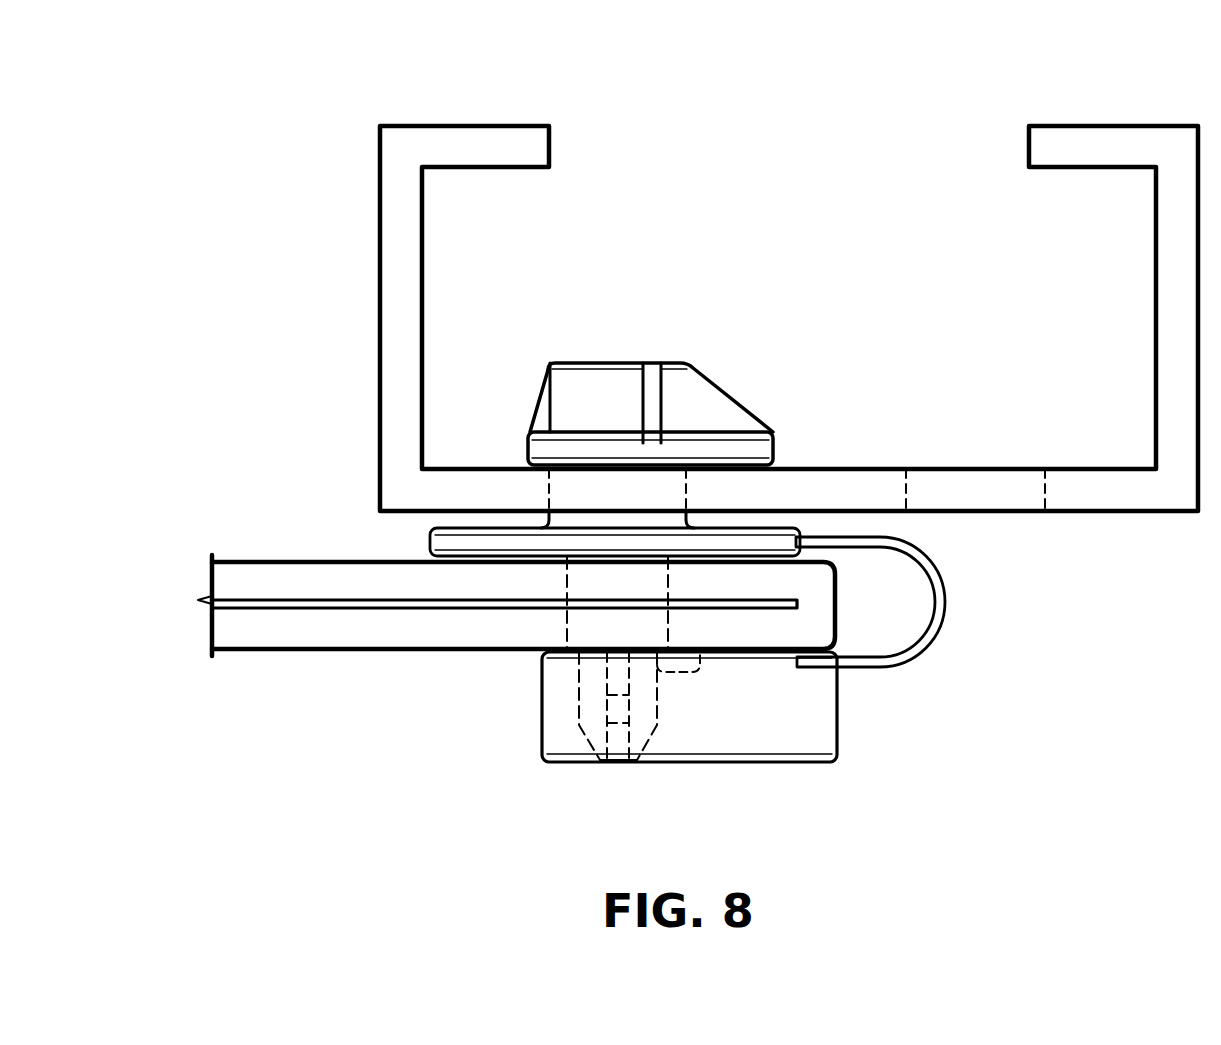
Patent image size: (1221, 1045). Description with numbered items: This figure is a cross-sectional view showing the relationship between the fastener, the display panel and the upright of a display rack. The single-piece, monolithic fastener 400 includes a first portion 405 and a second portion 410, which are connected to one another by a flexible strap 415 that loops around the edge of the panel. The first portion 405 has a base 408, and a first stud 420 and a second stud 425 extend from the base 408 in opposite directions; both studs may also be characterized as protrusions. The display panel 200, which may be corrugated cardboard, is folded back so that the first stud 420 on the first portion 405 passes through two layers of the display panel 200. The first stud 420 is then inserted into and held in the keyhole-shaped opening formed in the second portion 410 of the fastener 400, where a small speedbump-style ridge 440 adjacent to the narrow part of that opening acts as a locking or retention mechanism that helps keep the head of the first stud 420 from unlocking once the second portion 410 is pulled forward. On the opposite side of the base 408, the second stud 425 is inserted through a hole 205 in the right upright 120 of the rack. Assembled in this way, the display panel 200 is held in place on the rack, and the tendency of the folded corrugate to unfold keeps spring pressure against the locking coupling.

The right upright 120 is at (1120, 147).
The hole 205 is at (578, 492).
The first portion 405 is at (667, 403).
The second stud 425 is at (597, 387).
The base 408 is at (430, 546).
The display panel 200 is at (243, 565).
The flexible strap 415 is at (945, 602).
The fastener 400 is at (606, 709).
The second portion 410 is at (778, 723).
The first stud 420 is at (580, 625).
The ridge 440 is at (681, 670).